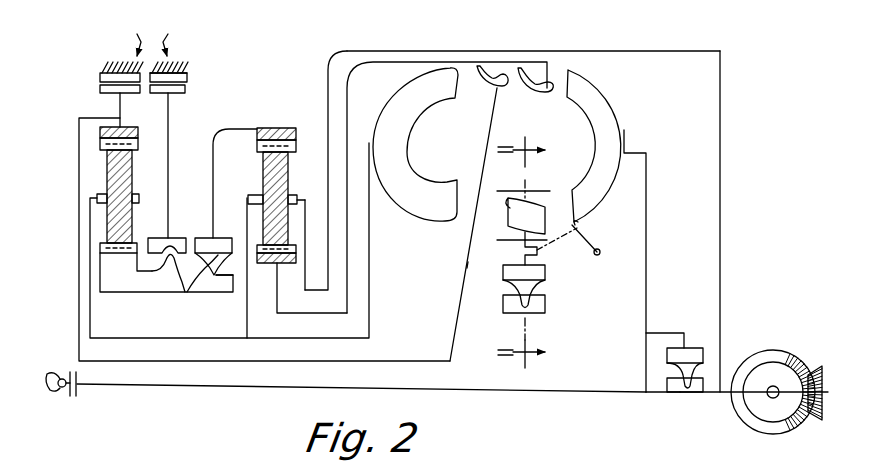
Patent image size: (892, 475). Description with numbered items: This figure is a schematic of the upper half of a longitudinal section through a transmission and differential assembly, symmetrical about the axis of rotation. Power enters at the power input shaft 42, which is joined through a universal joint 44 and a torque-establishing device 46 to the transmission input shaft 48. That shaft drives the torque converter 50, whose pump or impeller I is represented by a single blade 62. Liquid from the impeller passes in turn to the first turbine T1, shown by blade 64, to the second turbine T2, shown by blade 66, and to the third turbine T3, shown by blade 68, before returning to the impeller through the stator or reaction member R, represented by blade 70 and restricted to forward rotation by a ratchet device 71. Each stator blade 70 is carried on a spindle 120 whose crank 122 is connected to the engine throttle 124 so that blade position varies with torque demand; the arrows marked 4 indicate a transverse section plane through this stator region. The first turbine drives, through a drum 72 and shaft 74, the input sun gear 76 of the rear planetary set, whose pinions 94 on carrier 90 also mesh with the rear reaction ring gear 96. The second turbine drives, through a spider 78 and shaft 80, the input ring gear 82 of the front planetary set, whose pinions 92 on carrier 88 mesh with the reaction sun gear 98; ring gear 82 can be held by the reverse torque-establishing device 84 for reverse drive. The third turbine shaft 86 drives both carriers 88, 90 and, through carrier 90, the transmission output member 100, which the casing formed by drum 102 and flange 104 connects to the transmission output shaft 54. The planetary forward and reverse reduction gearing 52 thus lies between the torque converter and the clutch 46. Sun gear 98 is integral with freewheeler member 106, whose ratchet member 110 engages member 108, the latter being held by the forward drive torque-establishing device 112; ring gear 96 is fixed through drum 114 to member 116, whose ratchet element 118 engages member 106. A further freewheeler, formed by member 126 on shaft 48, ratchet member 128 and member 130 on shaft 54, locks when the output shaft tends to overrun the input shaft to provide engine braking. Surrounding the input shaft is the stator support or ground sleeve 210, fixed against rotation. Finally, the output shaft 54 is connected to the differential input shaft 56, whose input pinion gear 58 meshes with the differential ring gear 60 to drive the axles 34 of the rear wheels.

The axles 34 is at (776, 386).
The power input shaft 42 is at (48, 378).
The universal joint 44 is at (69, 394).
The torque-establishing device 46 is at (80, 383).
The transmission input shaft 48 is at (222, 386).
The torque converter 50 is at (585, 50).
The planetary forward and reverse reduction gearing 52 is at (192, 82).
The transmission output shaft 54 is at (710, 395).
The differential input shaft 56 is at (758, 397).
The input pinion gear 58 is at (814, 421).
The differential ring gear 60 is at (764, 357).
The impeller blade 62 is at (610, 108).
The first turbine blade 64 is at (531, 82).
The second turbine blade 66 is at (490, 83).
The third turbine blade 68 is at (399, 133).
The stator blade 70 is at (520, 196).
The ratchet device 71 is at (543, 282).
The drum 72 is at (357, 70).
The first turbine shaft 74 is at (303, 314).
The input sun gear 76 is at (268, 263).
The spider 78 is at (466, 268).
The second turbine shaft 80 is at (413, 357).
The input ring gear 82 is at (121, 127).
The reverse torque-establishing device 84 is at (100, 88).
The third turbine shaft 86 is at (158, 338).
The front carrier 88 is at (139, 198).
The rear carrier 90 is at (258, 195).
The front planetary pinions 92 is at (121, 176).
The rear planetary pinions 94 is at (282, 170).
The rear reaction ring gear 96 is at (268, 127).
The reaction sun gear 98 is at (120, 258).
The transmission output member 100 is at (321, 291).
The drum 102 is at (339, 54).
The flange 104 is at (721, 110).
The freewheeler member 106 is at (226, 278).
The second freewheeler member 108 is at (175, 237).
The ratchet member 110 is at (166, 262).
The forward drive torque-establishing device 112 is at (171, 94).
The drum 114 is at (216, 134).
The ratchet member 116 is at (218, 245).
The ratchet element 118 is at (197, 265).
The spindle 120 is at (512, 230).
The crank 122 is at (539, 252).
The throttle 124 is at (598, 234).
The freewheeler member 126 is at (688, 349).
The ratchet member 128 is at (688, 393).
The freewheeler member 130 is at (672, 391).
The stator support or ground sleeve 210 is at (545, 300).
The first turbine T1 is at (545, 94).
The second turbine T2 is at (500, 91).
The third turbine T3 is at (411, 157).
The stator or reaction member R is at (551, 212).
The pump or impeller I is at (630, 128).
The section line 4 is at (530, 253).